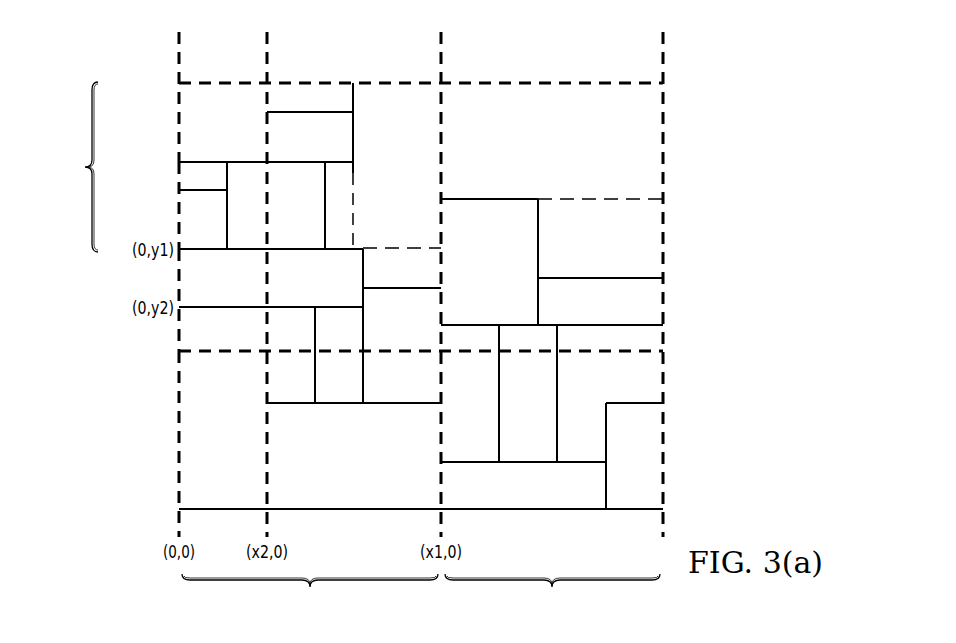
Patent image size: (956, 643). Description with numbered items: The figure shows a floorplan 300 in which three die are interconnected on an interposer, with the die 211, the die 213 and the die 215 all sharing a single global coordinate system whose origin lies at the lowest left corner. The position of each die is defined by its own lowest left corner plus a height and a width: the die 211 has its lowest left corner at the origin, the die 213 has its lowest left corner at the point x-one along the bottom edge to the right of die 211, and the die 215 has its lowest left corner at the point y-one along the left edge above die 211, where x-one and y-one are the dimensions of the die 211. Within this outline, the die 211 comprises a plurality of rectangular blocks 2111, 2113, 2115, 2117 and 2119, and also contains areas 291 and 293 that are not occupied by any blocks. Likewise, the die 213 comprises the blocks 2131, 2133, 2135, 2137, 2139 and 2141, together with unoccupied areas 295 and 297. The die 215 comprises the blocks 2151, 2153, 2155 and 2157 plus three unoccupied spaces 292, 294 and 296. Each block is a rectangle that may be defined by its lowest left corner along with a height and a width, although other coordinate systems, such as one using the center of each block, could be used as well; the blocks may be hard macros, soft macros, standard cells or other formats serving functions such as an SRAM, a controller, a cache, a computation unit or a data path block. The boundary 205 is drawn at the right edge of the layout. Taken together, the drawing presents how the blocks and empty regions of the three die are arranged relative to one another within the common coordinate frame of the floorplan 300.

The floorplan 300 is at (146, 60).
The region boundary 205 is at (666, 147).
The unoccupied space 292 is at (318, 80).
The unoccupied area 295 is at (662, 365).
The block 2155 is at (185, 112).
The unoccupied space 294 is at (186, 179).
The block 2151 is at (186, 226).
The block 2157 is at (357, 135).
The unoccupied space 296 is at (357, 180).
The unoccupied area 293 is at (403, 250).
The block 2117 is at (186, 282).
The block 2153 is at (248, 252).
The block 2115 is at (289, 312).
The block 2119 is at (397, 396).
The unoccupied area 291 is at (339, 396).
The block 2111 is at (186, 441).
The block 2139 is at (490, 206).
The unoccupied area 297 is at (600, 206).
The block 2141 is at (660, 294).
The block 2135 is at (472, 331).
The block 2137 is at (558, 368).
The block 2133 is at (662, 458).
The block 2113 is at (340, 503).
The block 2131 is at (534, 503).
The die 215 is at (69, 167).
The die 211 is at (310, 595).
The die 213 is at (552, 595).